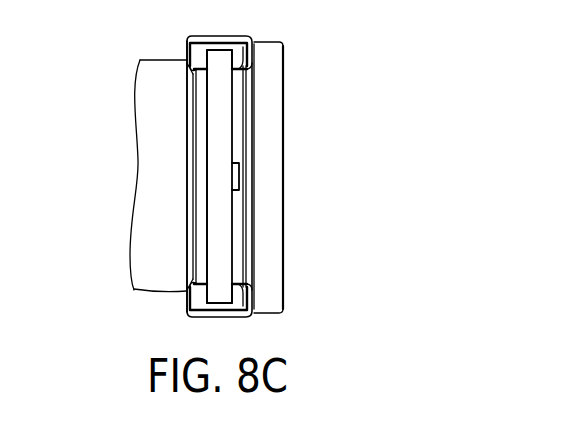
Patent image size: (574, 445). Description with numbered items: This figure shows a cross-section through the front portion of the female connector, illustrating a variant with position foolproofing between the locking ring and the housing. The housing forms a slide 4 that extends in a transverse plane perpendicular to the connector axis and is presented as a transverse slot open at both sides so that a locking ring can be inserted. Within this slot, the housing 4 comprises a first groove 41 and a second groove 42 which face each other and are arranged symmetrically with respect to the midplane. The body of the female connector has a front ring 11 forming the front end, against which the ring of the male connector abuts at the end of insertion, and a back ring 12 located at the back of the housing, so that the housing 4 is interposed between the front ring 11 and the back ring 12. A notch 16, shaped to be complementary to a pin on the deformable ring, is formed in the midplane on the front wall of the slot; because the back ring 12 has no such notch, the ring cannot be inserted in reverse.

The housing forming a slide 4 is at (229, 101).
The front ring 11 is at (295, 217).
The back ring 12 is at (219, 241).
The notch 16 is at (234, 174).
The first groove 41 is at (219, 57).
The second groove 42 is at (220, 297).